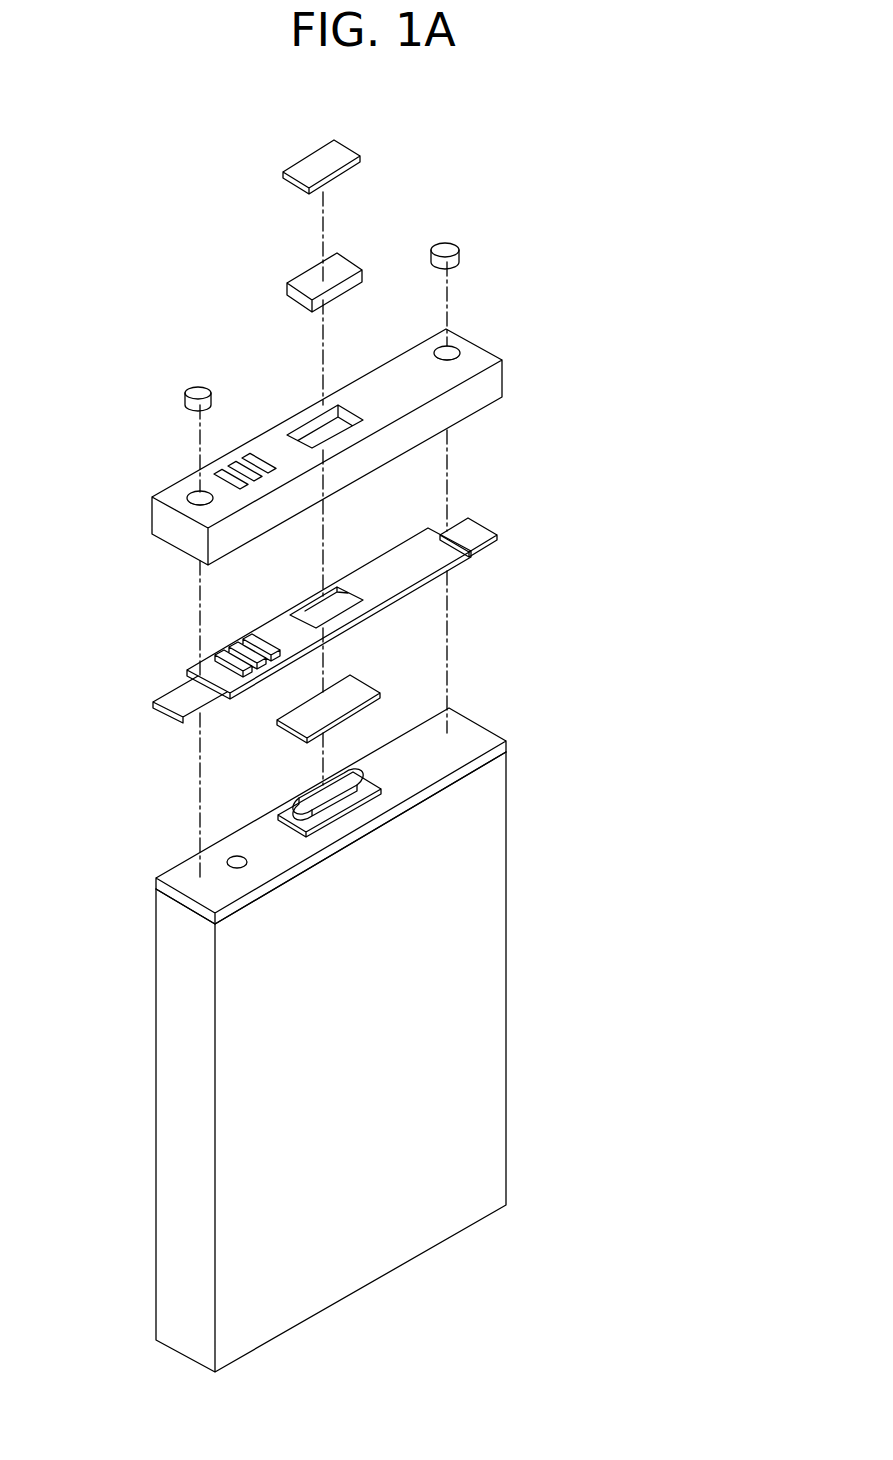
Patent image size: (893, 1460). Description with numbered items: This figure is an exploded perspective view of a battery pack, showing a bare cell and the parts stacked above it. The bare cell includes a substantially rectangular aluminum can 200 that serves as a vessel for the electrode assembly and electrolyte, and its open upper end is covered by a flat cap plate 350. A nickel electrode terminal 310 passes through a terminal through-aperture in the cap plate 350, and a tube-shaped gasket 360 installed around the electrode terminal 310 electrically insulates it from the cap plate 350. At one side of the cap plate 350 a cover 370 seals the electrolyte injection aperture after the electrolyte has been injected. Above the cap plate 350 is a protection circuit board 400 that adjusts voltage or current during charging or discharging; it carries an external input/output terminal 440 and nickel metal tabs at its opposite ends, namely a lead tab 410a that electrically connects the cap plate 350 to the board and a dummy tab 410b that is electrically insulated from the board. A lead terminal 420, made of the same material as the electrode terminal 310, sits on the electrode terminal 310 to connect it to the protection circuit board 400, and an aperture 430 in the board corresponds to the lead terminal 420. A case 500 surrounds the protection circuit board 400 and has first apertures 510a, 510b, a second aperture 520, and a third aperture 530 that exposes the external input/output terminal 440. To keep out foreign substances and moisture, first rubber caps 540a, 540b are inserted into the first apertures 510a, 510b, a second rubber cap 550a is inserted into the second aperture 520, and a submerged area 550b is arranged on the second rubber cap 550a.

The can 200 is at (328, 1009).
The electrode terminal 310 is at (340, 785).
The cap plate 350 is at (470, 738).
The gasket 360 is at (297, 827).
The cover 370 is at (226, 860).
The protection circuit board 400 is at (313, 549).
The lead tab 410a is at (472, 532).
The dummy tab 410b is at (180, 700).
The lead terminal 420 is at (297, 720).
The aperture 430 is at (306, 611).
The external input/output terminal 440 is at (230, 642).
The case 500 is at (320, 418).
The first aperture 510a is at (455, 347).
The first aperture 510b is at (190, 496).
The second aperture 520 is at (294, 436).
The third aperture 530 is at (234, 464).
The first rubber cap 540a is at (445, 251).
The first rubber cap 540b is at (196, 389).
The second rubber cap 550a is at (313, 282).
The submerged area 550b is at (325, 158).